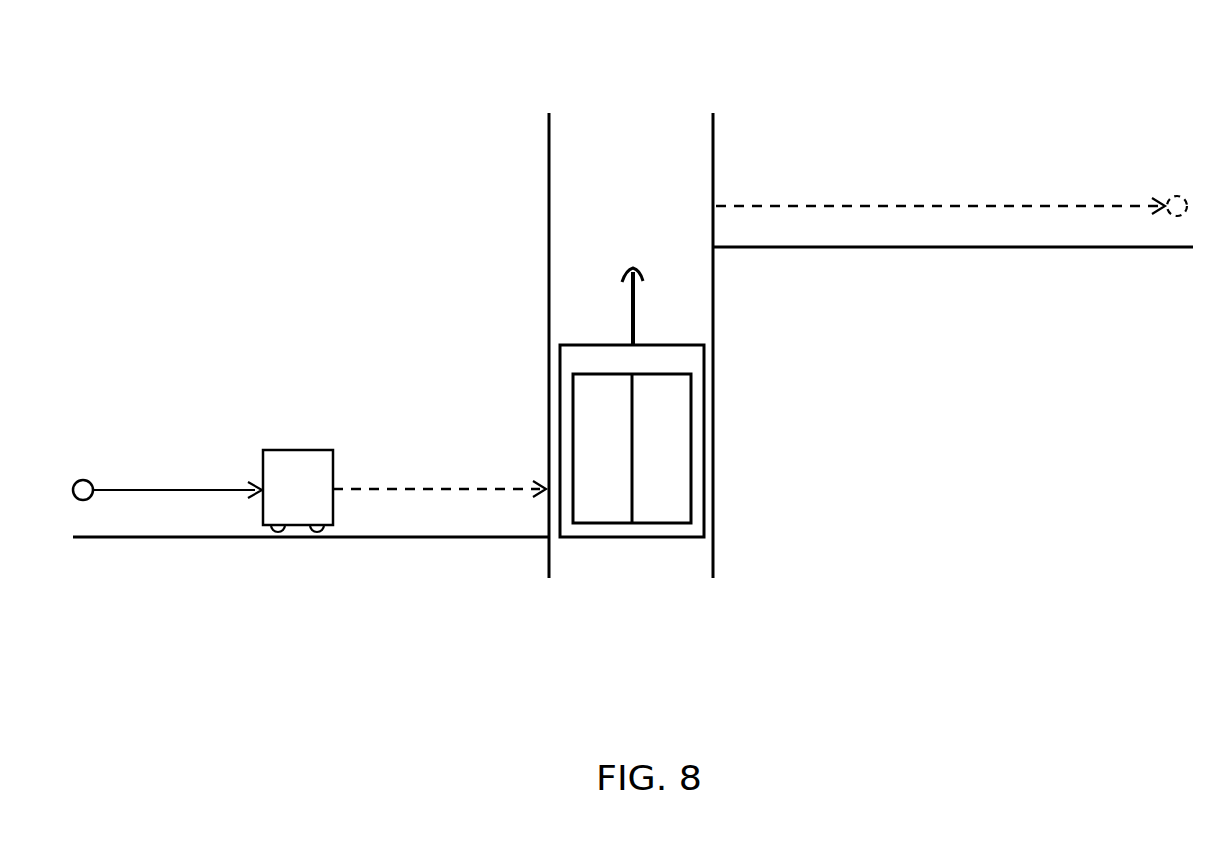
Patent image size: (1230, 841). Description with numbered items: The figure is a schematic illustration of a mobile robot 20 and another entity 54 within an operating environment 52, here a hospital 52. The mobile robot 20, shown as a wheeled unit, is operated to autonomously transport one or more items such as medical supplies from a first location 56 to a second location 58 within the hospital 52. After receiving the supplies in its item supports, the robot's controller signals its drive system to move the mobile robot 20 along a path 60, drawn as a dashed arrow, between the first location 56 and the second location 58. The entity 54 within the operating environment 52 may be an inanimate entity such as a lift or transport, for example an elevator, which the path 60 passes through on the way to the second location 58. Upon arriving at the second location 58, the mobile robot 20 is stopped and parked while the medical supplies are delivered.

The operating environment 52 is at (335, 67).
The first location 56 is at (83, 472).
The mobile robot 20 is at (300, 450).
The path 60 is at (372, 485).
The entity 54 is at (649, 559).
The second location 58 is at (1183, 196).